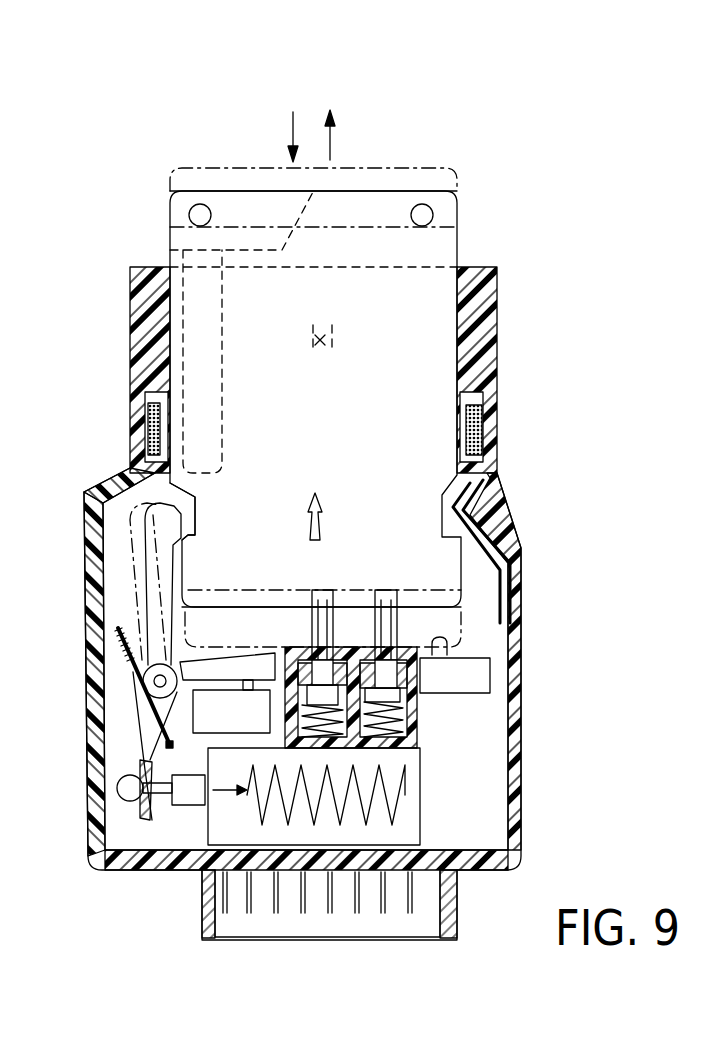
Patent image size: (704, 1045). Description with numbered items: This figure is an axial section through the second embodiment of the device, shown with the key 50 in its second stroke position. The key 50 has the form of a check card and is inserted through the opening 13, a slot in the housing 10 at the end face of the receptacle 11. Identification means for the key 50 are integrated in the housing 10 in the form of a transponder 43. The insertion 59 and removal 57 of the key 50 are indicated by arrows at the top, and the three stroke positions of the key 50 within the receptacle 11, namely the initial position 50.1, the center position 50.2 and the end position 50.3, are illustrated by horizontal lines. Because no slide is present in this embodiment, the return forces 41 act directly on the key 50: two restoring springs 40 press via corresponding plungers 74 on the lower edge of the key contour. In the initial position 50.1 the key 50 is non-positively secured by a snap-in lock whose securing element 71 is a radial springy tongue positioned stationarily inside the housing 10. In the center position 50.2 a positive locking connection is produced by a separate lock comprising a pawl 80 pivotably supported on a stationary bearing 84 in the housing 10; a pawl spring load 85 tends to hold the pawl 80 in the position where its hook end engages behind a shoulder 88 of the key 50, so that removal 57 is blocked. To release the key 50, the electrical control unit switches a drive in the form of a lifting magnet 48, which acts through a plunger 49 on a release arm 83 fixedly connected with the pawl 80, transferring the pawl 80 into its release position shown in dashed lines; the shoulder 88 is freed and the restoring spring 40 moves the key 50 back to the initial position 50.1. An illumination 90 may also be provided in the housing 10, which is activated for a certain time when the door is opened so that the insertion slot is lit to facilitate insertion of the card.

The housing 10 is at (530, 543).
The receptacle 11 is at (460, 728).
The opening 13 is at (457, 268).
The restoring spring 40 is at (392, 728).
The return forces 41 is at (333, 527).
The transponder 43 is at (483, 430).
The lifting magnet 48 is at (224, 830).
The plunger 49 is at (123, 790).
The key 50 is at (158, 203).
The initial position 50.1 is at (498, 168).
The center position 50.2 is at (498, 191).
The end position 50.3 is at (498, 226).
The removal 57 is at (333, 148).
The insertion 59 is at (291, 133).
The securing element 71 is at (490, 518).
The plunger 74 is at (305, 635).
The pawl 80 is at (134, 557).
The release arm 83 is at (138, 733).
The bearing 84 is at (147, 690).
The pawl spring load 85 is at (126, 657).
The shoulder 88 is at (189, 543).
The illumination 90 is at (324, 330).